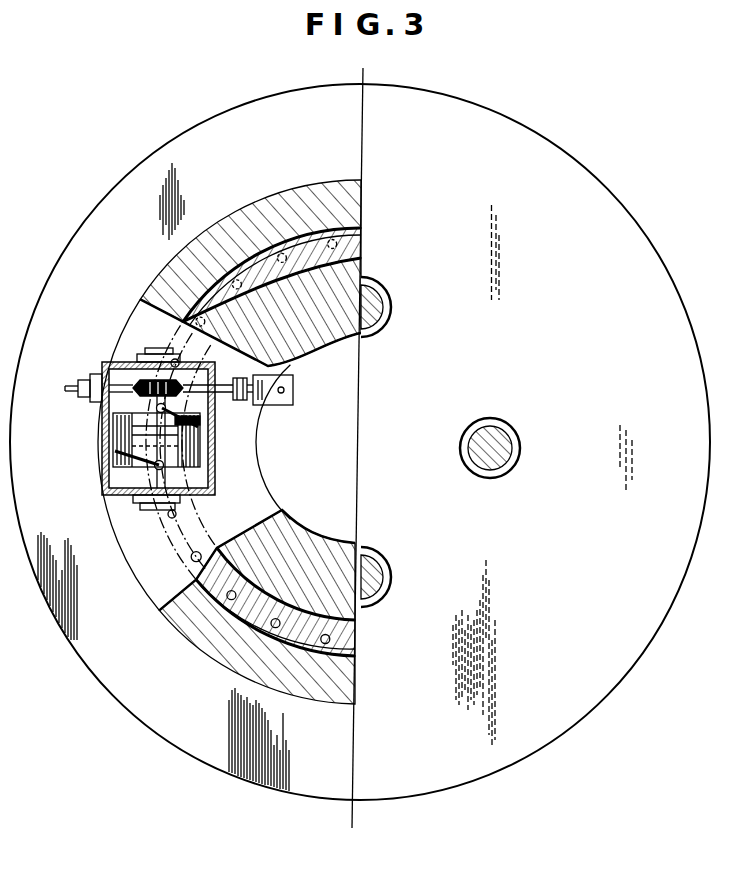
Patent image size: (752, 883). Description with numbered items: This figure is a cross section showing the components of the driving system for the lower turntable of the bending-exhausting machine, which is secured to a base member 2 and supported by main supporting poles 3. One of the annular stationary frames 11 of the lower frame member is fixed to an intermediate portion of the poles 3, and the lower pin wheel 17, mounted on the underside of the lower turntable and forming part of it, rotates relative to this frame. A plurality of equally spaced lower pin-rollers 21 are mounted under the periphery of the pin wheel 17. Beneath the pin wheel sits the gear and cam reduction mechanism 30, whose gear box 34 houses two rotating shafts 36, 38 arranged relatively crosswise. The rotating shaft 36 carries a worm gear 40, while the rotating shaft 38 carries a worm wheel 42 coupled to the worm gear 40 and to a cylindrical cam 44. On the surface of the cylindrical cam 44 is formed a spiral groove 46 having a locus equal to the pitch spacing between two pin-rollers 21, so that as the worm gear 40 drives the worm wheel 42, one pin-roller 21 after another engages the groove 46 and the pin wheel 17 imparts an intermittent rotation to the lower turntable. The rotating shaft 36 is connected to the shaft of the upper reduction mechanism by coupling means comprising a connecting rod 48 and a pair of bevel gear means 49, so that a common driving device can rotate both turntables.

The base member 2 is at (607, 193).
The supporting pole 3 is at (381, 305).
The annular stationary frame 11 is at (258, 213).
The lower pin wheel 17 is at (311, 246).
The lower pin-roller 21 is at (235, 279).
The gear and cam reduction mechanism 30 is at (182, 429).
The gear box 34 is at (204, 474).
The rotating shaft 36 is at (120, 378).
The rotating shaft 38 is at (168, 353).
The worm gear 40 is at (147, 375).
The worm wheel 42 is at (201, 420).
The cylindrical cam 44 is at (104, 433).
The spiral groove 46 is at (152, 463).
The connecting rod 48 is at (290, 390).
The bevel gear means 49 is at (284, 395).